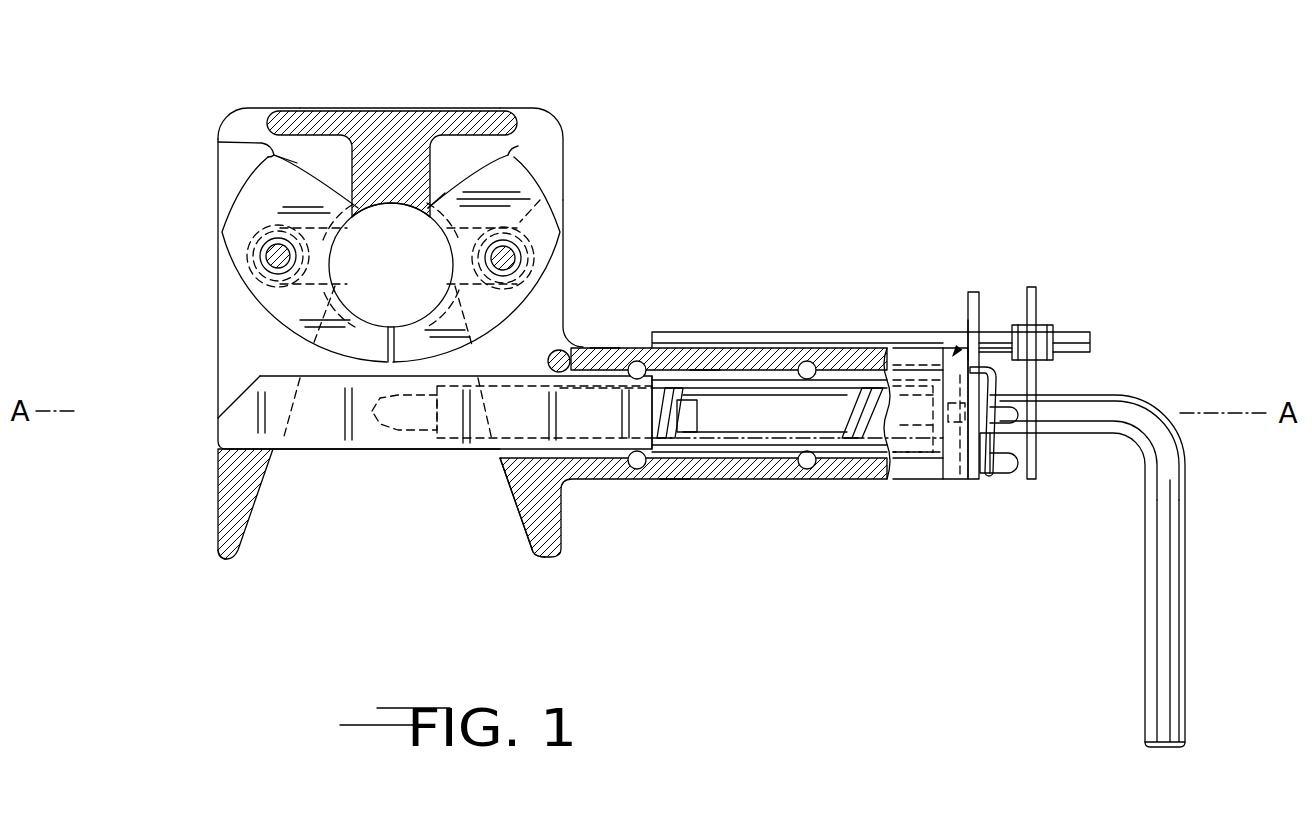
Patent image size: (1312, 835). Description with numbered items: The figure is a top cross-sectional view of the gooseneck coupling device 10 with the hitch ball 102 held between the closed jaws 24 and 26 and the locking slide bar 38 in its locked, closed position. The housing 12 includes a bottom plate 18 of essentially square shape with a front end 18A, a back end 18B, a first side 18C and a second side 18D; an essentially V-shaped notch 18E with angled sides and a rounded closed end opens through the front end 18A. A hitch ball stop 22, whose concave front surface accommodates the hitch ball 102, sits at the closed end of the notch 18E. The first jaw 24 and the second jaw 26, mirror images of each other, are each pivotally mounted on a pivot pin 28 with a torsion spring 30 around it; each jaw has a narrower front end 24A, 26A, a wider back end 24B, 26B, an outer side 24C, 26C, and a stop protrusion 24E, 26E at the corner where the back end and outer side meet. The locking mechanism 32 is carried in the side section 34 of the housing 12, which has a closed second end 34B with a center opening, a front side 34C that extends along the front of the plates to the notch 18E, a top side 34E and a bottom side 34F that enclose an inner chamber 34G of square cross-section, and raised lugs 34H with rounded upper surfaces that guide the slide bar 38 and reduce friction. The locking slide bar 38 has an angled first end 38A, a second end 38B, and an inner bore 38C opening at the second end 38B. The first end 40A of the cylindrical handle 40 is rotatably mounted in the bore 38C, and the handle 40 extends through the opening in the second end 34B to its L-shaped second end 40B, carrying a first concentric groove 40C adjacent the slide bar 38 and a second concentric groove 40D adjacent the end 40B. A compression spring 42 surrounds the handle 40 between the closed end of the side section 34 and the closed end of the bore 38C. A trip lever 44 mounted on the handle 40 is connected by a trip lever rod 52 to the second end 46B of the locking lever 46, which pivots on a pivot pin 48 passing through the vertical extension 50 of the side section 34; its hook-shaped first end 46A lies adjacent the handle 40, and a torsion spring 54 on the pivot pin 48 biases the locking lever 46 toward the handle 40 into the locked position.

The coupling device 10 is at (675, 95).
The housing 12 is at (563, 127).
The bottom plate 18 is at (218, 192).
The front end of bottom plate 18A is at (226, 560).
The back end of bottom plate 18B is at (257, 108).
The first side of bottom plate 18C is at (560, 552).
The second side of bottom plate 18D is at (218, 540).
The notch 18E is at (470, 532).
The hitch ball stop 22 is at (445, 108).
The first jaw 24 is at (258, 290).
The front end of first jaw 24A is at (307, 343).
The back end of first jaw 24B is at (296, 162).
The outer side of first jaw 24C is at (268, 306).
The stop protrusion of first jaw 24E is at (232, 145).
The second jaw 26 is at (515, 173).
The front end of second jaw 26A is at (462, 348).
The back end of second jaw 26B is at (432, 145).
The outer side of second jaw 26C is at (556, 255).
The stop protrusion of second jaw 26E is at (514, 150).
The pivot pin 28 is at (557, 222).
The spring 30 is at (540, 200).
The hitch ball 102 is at (372, 262).
The locking mechanism 32 is at (792, 330).
The side section 34 is at (568, 479).
The second end of side section 34B is at (966, 460).
The front side of side section 34C is at (767, 479).
The top side of side section 34E is at (600, 348).
The bottom side of side section 34F is at (672, 481).
The inner chamber 34G is at (707, 368).
The raised lugs 34H is at (578, 347).
The locking slide bar 38 is at (307, 445).
The first end of locking slide bar 38A is at (242, 424).
The second end of locking slide bar 38B is at (658, 373).
The inner bore 38C is at (455, 443).
The handle 40 is at (1140, 396).
The first end of handle 40A is at (410, 432).
The second end of handle 40B is at (1177, 651).
The first concentric groove 40C is at (688, 422).
The second concentric groove 40D is at (963, 442).
The spring 42 is at (853, 365).
The trip lever 44 is at (1033, 287).
The locking lever 46 is at (962, 316).
The first end of locking lever 46A is at (998, 482).
The second end of locking lever 46B is at (972, 291).
The pivot pin 48 is at (1040, 447).
The vertical extension 50 is at (956, 352).
The trip lever rod 52 is at (1083, 332).
The torsion spring 54 is at (990, 375).